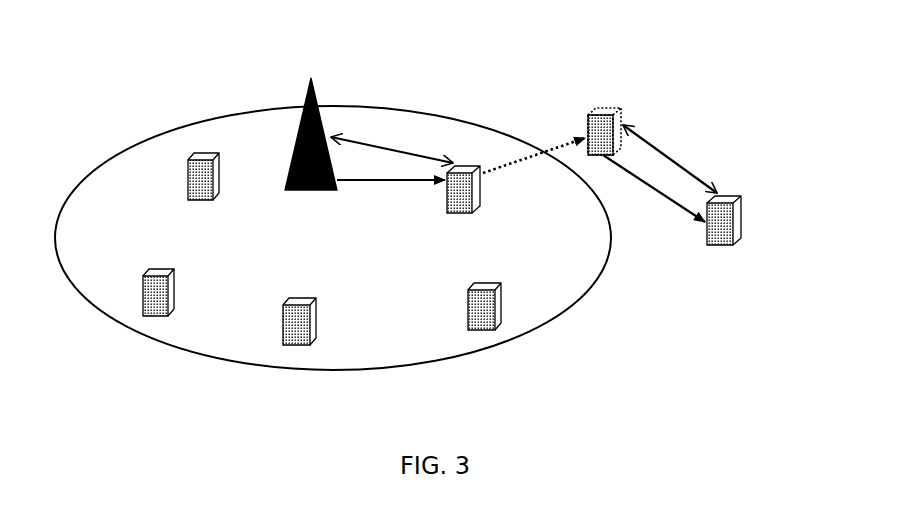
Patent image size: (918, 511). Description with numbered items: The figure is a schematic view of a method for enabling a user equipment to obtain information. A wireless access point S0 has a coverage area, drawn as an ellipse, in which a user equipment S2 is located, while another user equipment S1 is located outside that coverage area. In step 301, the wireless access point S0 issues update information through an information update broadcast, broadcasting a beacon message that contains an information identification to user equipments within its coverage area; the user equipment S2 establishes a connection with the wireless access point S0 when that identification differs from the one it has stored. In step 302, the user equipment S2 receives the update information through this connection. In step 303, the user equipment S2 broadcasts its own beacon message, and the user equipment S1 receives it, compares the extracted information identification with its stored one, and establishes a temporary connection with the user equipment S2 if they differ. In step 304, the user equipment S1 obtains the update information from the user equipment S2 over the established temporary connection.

The wireless access point S0 is at (320, 107).
The user equipment S1 is at (733, 197).
The user equipment S2 is at (463, 168).
The step of issuing update information through an information update broadcast 301 is at (392, 142).
The step of receiving the update information 302 is at (391, 195).
The step of broadcasting a beacon message 303 is at (670, 159).
The step of obtaining the update information 304 is at (654, 188).